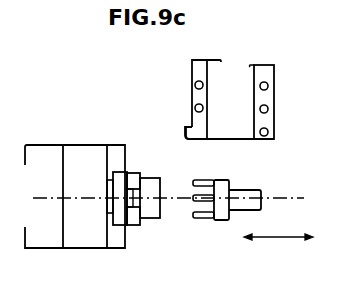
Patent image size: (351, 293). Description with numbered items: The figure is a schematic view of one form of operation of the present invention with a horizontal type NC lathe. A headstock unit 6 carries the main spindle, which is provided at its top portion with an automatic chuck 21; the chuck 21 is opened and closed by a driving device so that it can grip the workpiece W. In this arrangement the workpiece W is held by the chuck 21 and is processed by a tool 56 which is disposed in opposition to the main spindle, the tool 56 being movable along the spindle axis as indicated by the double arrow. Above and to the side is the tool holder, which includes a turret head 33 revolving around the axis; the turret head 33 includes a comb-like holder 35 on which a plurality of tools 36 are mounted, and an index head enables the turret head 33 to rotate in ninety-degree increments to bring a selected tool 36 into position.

The spindle head / headstock 6 is at (50, 146).
The automatic chuck 21 is at (118, 177).
The workpiece W is at (153, 210).
The turret head 33 is at (243, 84).
The comb-like holder 35 is at (268, 118).
The tool 36 is at (186, 123).
The tool 56 is at (222, 180).